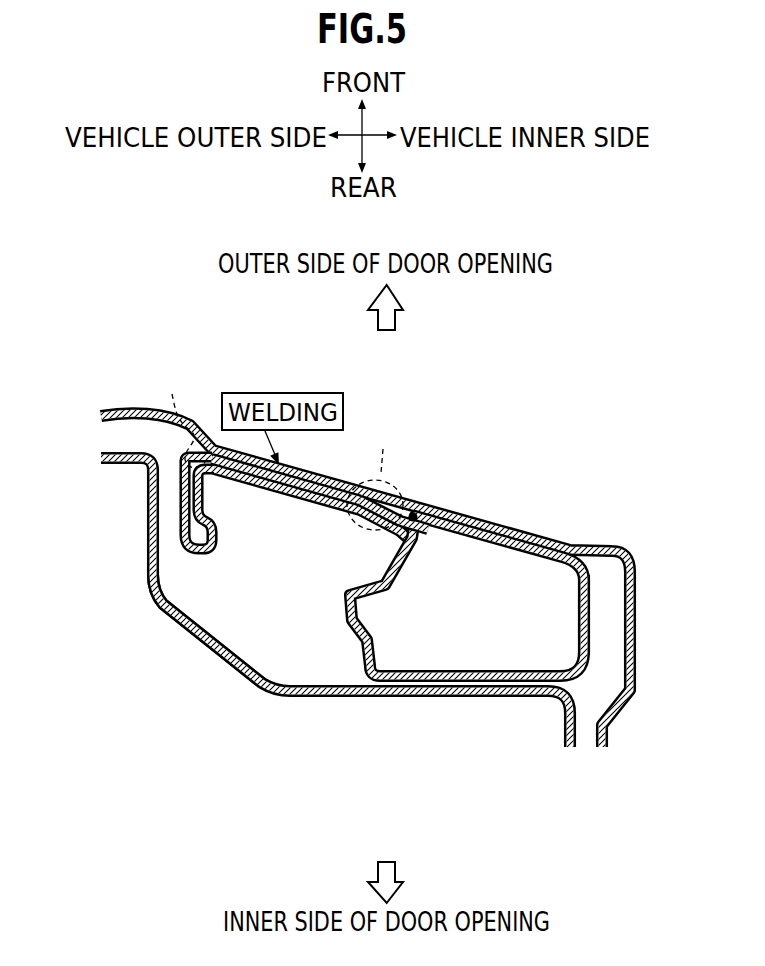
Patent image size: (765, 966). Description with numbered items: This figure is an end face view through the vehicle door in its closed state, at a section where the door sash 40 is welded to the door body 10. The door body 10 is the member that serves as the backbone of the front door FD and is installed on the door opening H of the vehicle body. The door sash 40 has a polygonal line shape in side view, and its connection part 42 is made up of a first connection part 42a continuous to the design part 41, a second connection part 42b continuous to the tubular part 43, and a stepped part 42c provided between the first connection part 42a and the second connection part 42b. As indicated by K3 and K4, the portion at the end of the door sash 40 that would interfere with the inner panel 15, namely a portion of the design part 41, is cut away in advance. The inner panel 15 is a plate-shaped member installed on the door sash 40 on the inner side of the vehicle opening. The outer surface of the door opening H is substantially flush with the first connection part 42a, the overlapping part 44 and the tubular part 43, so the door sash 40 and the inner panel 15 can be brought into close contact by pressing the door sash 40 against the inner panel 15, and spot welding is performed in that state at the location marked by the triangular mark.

The door body 10 is at (331, 602).
The inner panel 15 is at (130, 409).
The door sash 40 is at (412, 593).
The design part 41 is at (205, 548).
The connection part 42 is at (320, 527).
The first connection part 42a is at (349, 510).
The second connection part 42b is at (403, 538).
The stepped part 42c is at (366, 514).
The tubular part 43 is at (589, 660).
The overlapping part 44 is at (415, 513).
The cut section K3 is at (182, 418).
The cut section K4 is at (375, 477).
The front door FD is at (177, 661).
The door opening H is at (488, 643).